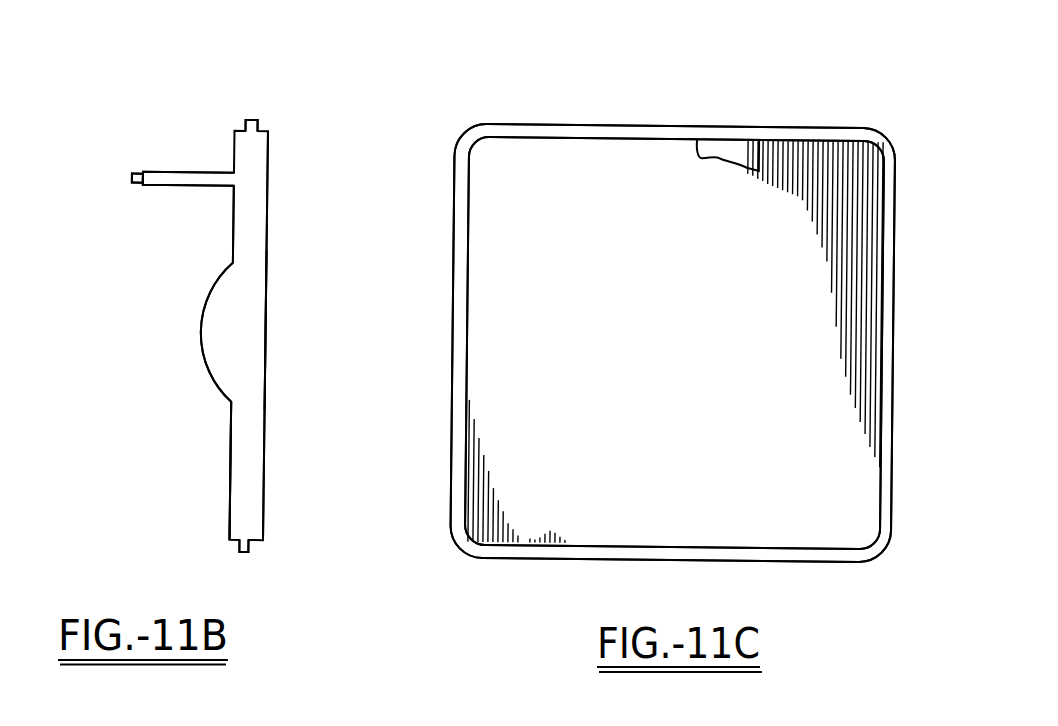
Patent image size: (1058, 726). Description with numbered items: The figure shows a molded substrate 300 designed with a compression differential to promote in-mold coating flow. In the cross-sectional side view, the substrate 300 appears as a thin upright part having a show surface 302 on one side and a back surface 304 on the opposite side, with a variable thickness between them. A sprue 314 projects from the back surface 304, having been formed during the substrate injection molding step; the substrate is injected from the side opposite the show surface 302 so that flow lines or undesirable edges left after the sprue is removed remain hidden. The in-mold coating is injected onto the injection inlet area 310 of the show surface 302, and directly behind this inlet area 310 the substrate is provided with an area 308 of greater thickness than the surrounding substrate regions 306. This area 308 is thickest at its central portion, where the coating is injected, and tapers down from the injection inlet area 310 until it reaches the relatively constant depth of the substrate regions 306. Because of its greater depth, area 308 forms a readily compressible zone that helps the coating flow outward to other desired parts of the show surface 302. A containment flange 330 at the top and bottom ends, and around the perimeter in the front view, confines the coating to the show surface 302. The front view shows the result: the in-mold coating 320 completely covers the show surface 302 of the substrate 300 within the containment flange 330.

In FIG. 11B, the molded substrate 300 is at (199, 128).
In FIG. 11C, the molded substrate 300 is at (662, 121).
In FIG. 11B, the show surface 302 is at (266, 511).
In FIG. 11C, the show surface 302 is at (733, 137).
In FIG. 11B, the back surface 304 is at (228, 512).
In FIG. 11B, the substrate regions 306 is at (234, 232).
In FIG. 11B, the area of greater thickness 308 is at (202, 330).
In FIG. 11B, the injection inlet area 310 is at (267, 327).
In FIG. 11B, the sprue 314 is at (168, 188).
In FIG. 11C, the in-mold coating 320 is at (466, 451).
In FIG. 11B, the containment flange 330 is at (258, 120).
In FIG. 11C, the containment flange 330 is at (600, 133).